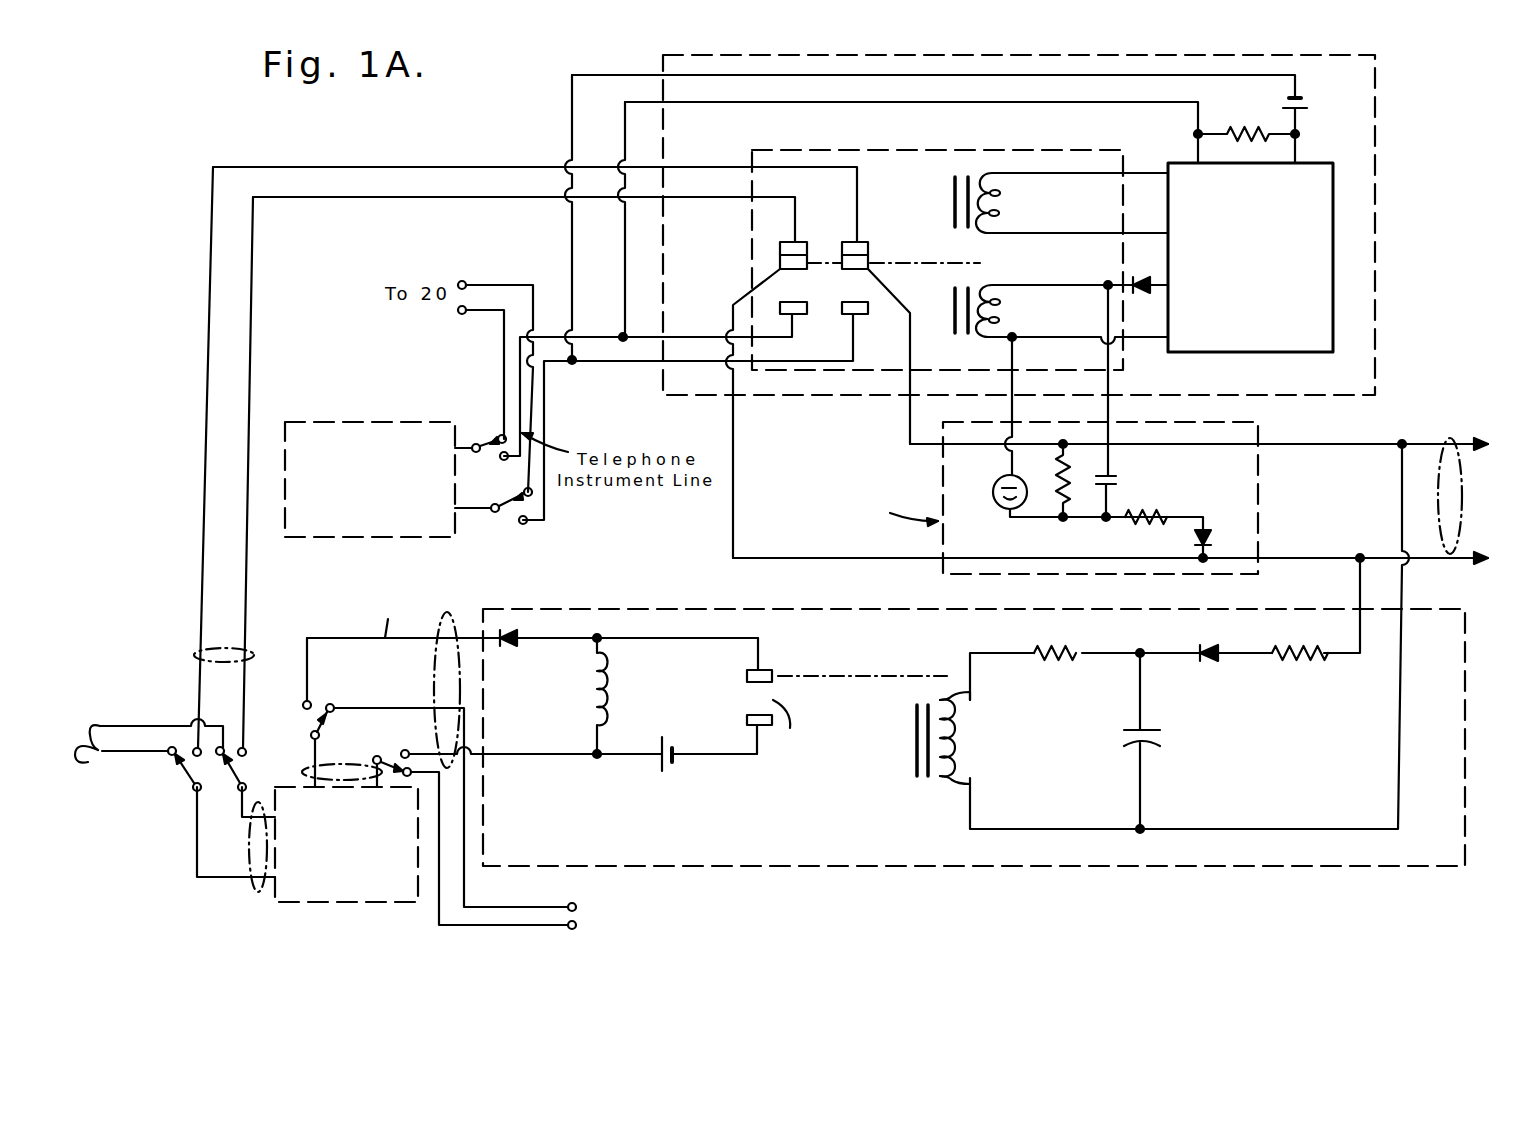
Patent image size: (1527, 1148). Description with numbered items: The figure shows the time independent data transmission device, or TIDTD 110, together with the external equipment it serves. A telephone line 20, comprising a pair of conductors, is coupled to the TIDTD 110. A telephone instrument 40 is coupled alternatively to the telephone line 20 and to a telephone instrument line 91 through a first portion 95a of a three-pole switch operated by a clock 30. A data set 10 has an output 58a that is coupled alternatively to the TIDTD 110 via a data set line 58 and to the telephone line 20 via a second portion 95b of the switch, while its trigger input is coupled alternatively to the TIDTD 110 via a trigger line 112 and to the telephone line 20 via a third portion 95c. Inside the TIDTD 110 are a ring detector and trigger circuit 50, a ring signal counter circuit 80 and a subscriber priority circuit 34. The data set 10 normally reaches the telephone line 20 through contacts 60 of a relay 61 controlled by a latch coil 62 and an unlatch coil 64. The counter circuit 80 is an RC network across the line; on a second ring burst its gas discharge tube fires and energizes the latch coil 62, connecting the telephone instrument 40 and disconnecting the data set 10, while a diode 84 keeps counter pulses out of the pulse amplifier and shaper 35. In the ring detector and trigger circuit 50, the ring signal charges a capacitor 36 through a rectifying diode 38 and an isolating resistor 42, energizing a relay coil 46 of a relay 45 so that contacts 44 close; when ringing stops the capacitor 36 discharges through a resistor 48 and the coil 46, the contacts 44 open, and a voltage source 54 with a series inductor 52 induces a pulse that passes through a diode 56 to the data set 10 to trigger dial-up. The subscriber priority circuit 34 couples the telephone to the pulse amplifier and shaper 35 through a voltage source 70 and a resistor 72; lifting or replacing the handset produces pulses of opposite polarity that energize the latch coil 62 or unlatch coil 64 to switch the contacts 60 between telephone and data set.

The time independent data transmission device (TIDTD) 110 is at (210, 142).
The data set 10 is at (345, 905).
The telephone line 20 is at (1490, 482).
The clock 30 is at (654, 919).
The subscriber priority circuit 34 is at (1384, 229).
The pulse amplifier and shaper 35 is at (1336, 166).
The capacitor 36 is at (1160, 743).
The rectifying diode 38 is at (1230, 659).
The telephone instrument 40 is at (400, 421).
The isolating resistor 42 is at (1312, 663).
The contacts 44 is at (777, 700).
The relay 45 is at (935, 673).
The relay coil 46 is at (945, 786).
The resistor 48 is at (1048, 665).
The ring detector and trigger circuit 50 is at (1470, 852).
The inductor 52 is at (585, 708).
The voltage source 54 is at (662, 772).
The diode 56 is at (511, 650).
The data set line 58 is at (196, 656).
The output of the data set 58a is at (257, 890).
The contacts 60 is at (824, 247).
The relay 61 is at (860, 140).
The latch coil 62 is at (1002, 285).
The unlatch coil 64 is at (995, 172).
The voltage source 70 is at (1305, 106).
The resistor 72 is at (1246, 117).
The ring signal counter circuit 80 is at (943, 574).
The diode 84 is at (1143, 278).
The telephone instrument line 91 is at (600, 347).
The first portion of three-pole switch 95a is at (500, 502).
The second portion of three-pole switch 95b is at (172, 772).
The third portion of three-pole switch 95c is at (376, 757).
The trigger line 112 is at (450, 624).